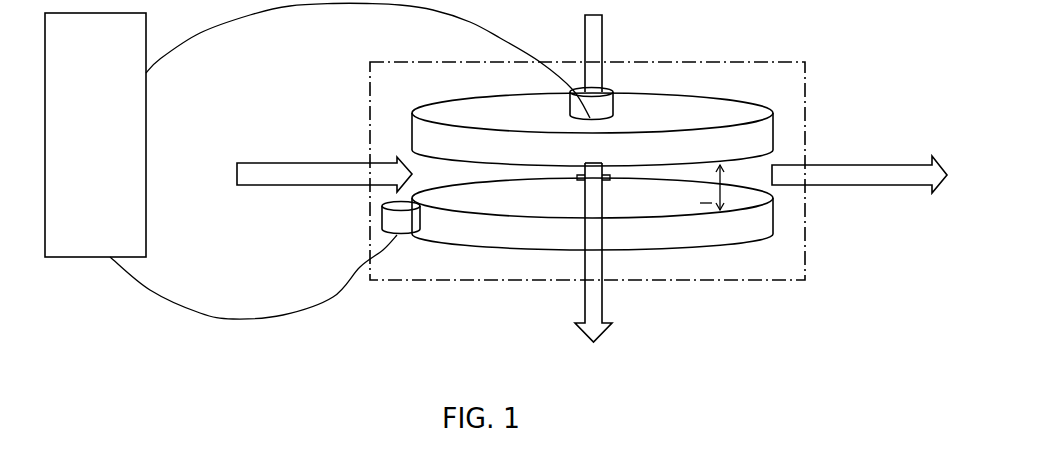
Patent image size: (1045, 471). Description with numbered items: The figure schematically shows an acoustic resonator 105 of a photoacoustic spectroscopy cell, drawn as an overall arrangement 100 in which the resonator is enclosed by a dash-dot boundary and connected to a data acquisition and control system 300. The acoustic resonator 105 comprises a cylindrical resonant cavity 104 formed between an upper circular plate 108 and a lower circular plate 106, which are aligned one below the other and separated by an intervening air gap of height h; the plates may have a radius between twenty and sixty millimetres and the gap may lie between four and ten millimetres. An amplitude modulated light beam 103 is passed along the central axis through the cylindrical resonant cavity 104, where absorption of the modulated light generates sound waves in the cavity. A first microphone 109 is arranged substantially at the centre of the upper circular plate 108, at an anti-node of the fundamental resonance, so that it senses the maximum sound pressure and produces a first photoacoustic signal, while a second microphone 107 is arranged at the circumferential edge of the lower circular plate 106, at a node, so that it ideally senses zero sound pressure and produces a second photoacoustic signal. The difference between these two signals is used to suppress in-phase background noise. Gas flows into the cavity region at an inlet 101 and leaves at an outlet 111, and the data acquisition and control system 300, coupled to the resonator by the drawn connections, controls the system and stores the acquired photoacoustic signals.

The processing system 100 is at (147, 357).
The gas inflow 101 is at (310, 163).
The modulated light beam 103 is at (592, 33).
The cylindrical resonant cavity 104 is at (472, 181).
The acoustic resonator 105 is at (428, 287).
The lower circular plate 106 is at (680, 240).
The second microphone 107 is at (383, 229).
The upper circular plate 108 is at (773, 119).
The first microphone 109 is at (612, 91).
The gas outflow 111 is at (915, 161).
The data acquisition and control system 300 is at (113, 131).